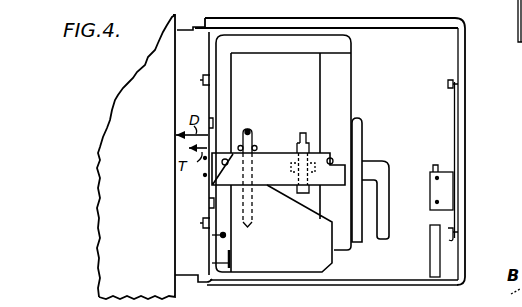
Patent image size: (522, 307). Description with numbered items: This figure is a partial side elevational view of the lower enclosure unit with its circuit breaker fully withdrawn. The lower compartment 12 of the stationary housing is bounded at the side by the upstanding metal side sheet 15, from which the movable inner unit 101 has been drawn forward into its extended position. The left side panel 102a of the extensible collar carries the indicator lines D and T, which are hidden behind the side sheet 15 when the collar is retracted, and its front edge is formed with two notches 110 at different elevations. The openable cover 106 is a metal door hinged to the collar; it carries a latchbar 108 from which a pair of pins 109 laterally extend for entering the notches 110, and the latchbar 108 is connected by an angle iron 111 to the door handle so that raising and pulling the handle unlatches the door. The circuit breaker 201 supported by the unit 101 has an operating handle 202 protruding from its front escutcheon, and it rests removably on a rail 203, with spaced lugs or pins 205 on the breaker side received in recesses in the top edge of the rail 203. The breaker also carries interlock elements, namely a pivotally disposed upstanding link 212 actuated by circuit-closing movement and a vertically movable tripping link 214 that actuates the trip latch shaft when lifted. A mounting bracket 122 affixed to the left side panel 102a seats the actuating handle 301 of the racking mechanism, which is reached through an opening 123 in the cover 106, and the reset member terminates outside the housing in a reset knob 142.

The compartment 12 is at (147, 218).
The side sheet 15 is at (110, 133).
The movable inner unit 101 is at (214, 300).
The left side panel 102a is at (183, 267).
The openable cover 106 is at (420, 37).
The latchbar 108 is at (455, 129).
The pins 109 is at (449, 82).
The notches 110 is at (203, 80).
The angle iron 111 is at (445, 188).
The mounting bracket 122 is at (518, 6).
The opening 123 is at (432, 267).
The reset knob 142 is at (223, 235).
The circuit breaker 201 is at (347, 69).
The operating handle 202 is at (378, 181).
The rail 203 is at (264, 182).
The pins 205 is at (222, 164).
The upstanding link 212 is at (303, 131).
The tripping link 214 is at (250, 134).
The actuating handle 301 is at (229, 263).